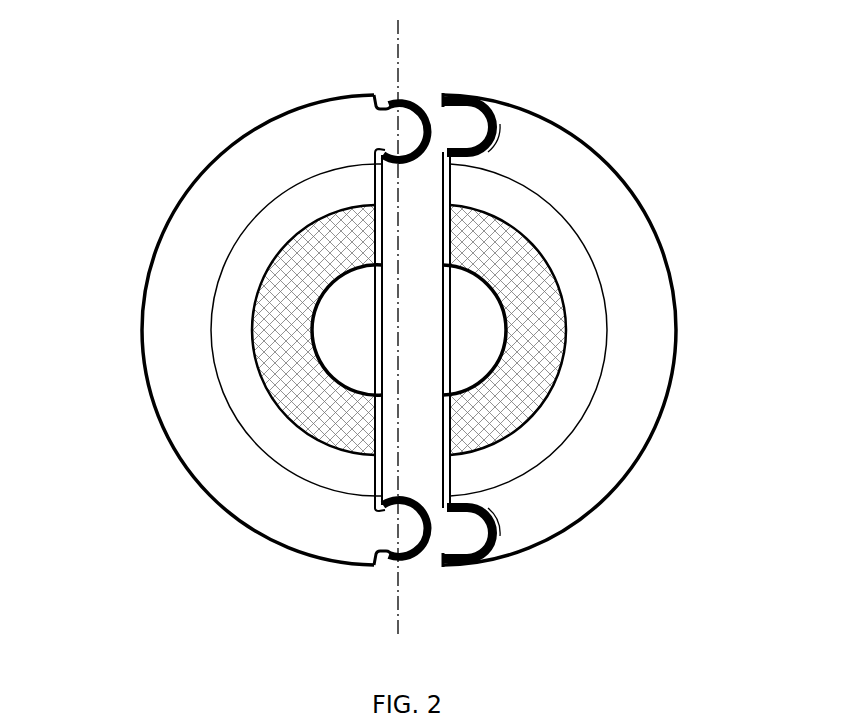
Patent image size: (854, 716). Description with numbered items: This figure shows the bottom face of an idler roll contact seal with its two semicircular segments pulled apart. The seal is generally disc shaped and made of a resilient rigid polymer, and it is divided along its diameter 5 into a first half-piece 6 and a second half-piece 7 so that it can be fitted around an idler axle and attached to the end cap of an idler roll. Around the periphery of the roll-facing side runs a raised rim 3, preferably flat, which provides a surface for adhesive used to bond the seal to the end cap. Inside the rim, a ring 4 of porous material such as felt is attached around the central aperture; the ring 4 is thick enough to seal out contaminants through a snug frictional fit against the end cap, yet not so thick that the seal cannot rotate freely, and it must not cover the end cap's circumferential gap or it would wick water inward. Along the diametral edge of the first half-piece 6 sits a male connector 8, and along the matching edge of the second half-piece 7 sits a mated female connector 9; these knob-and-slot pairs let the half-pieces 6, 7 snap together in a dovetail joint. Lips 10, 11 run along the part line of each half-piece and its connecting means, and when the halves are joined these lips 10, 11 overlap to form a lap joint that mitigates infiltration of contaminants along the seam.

The raised rim 3 is at (195, 357).
The ring of porous material 4 is at (318, 405).
The diameter 5 is at (405, 55).
The first half-piece 6 is at (242, 333).
The second half-piece 7 is at (618, 337).
The male connector 8 is at (413, 127).
The female connector 9 is at (477, 137).
The lip 10 is at (450, 192).
The lip 11 is at (373, 472).